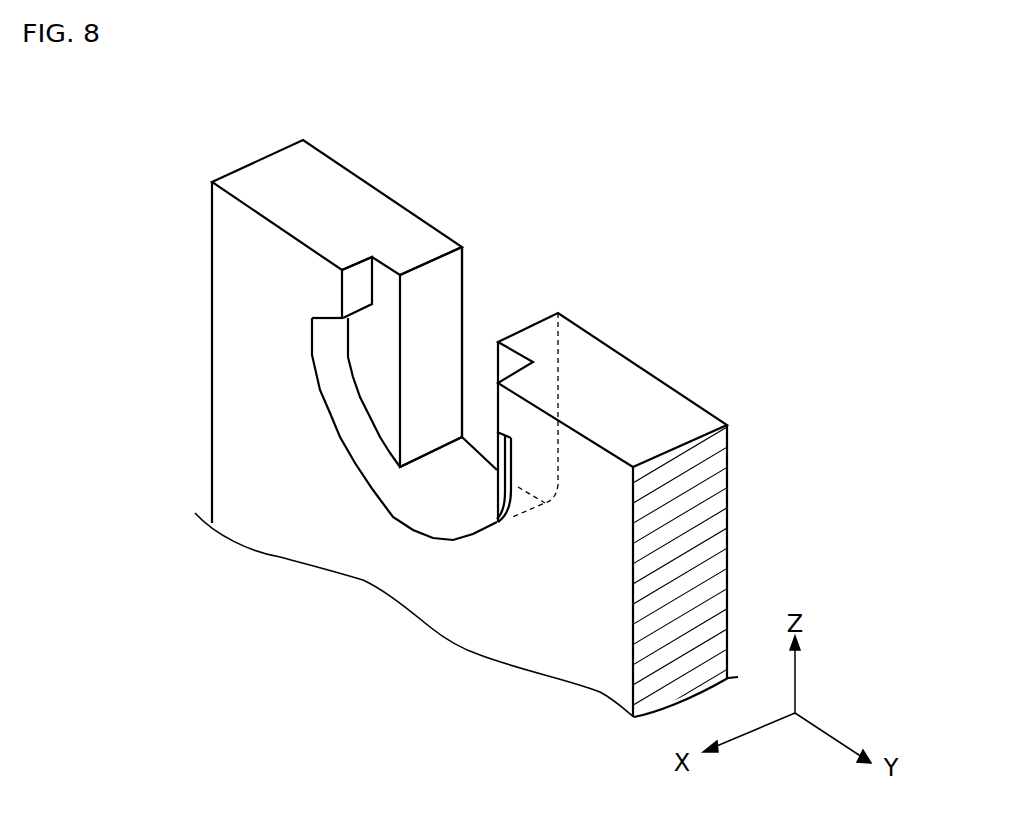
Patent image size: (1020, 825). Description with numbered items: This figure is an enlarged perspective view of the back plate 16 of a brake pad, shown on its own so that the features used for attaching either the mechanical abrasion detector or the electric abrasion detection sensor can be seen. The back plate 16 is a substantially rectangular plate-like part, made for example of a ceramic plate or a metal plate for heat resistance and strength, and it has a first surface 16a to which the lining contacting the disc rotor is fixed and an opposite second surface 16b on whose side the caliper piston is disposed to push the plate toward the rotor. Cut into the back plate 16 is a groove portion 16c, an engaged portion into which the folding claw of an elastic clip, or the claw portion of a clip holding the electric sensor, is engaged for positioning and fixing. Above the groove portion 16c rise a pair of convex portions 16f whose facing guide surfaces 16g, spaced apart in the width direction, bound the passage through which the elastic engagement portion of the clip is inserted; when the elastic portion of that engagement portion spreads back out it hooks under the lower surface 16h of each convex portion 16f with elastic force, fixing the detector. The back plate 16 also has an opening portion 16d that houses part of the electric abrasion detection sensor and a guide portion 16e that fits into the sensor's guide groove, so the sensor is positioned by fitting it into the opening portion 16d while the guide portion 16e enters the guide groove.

The back plate 16 is at (280, 177).
The first surface 16a is at (659, 368).
The second surface 16b is at (560, 627).
The groove portion 16c is at (348, 365).
The opening portion 16d is at (442, 287).
The guide portion 16e is at (442, 348).
The convex portion 16f is at (332, 306).
The guide surface 16g is at (317, 350).
The lower surface 16h is at (357, 286).